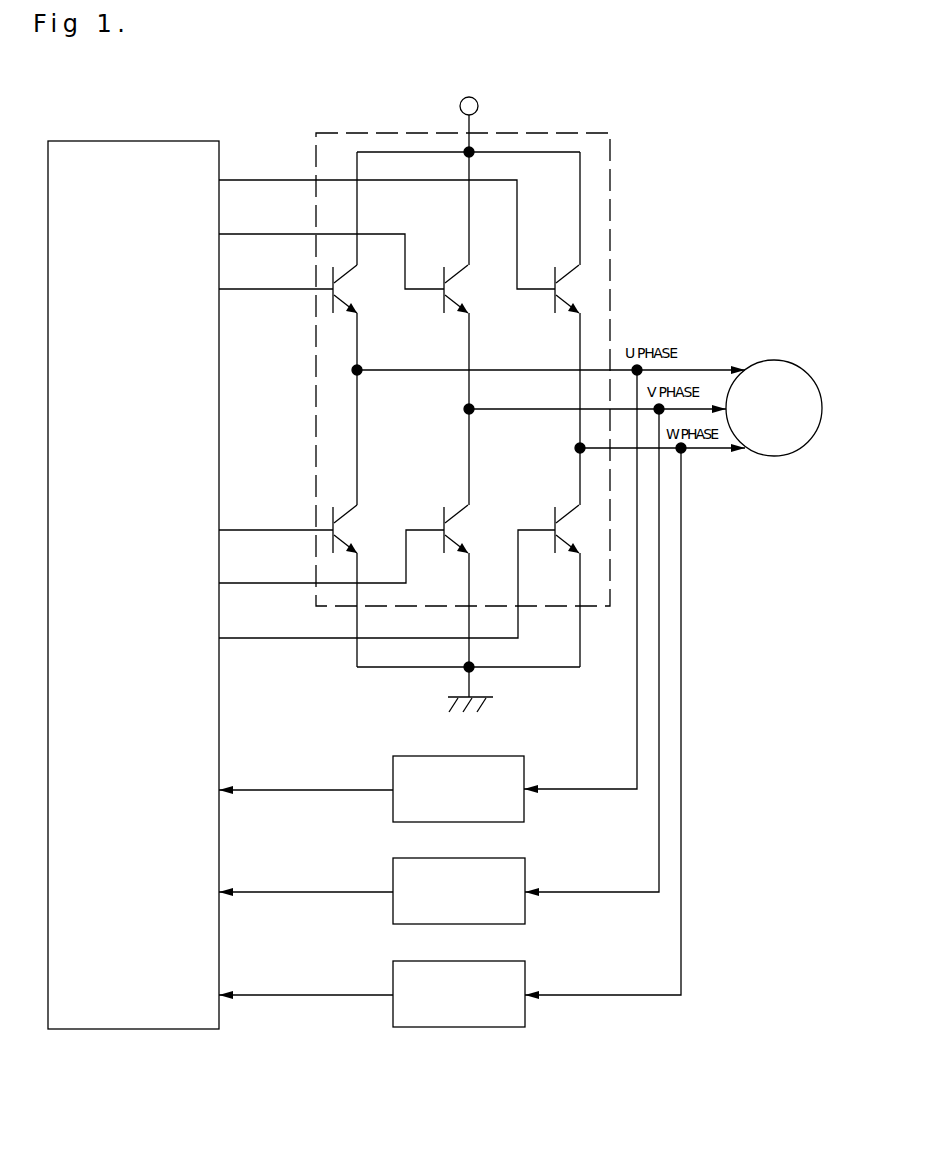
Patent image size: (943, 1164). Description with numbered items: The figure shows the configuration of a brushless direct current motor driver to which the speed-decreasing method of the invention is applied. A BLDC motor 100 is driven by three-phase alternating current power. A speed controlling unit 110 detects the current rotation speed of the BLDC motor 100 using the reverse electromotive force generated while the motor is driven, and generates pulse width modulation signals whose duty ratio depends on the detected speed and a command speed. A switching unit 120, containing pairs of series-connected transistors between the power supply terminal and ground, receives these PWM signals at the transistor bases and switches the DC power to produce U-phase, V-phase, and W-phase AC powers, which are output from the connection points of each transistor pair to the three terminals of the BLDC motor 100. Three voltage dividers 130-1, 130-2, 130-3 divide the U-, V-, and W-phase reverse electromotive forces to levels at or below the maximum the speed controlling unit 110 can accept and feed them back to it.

The BLDC motor 100 is at (770, 360).
The speed controlling unit 110 is at (131, 141).
The switching unit 120 is at (366, 133).
The voltage divider 130-1 is at (510, 756).
The voltage divider 130-2 is at (525, 858).
The voltage divider 130-3 is at (525, 961).